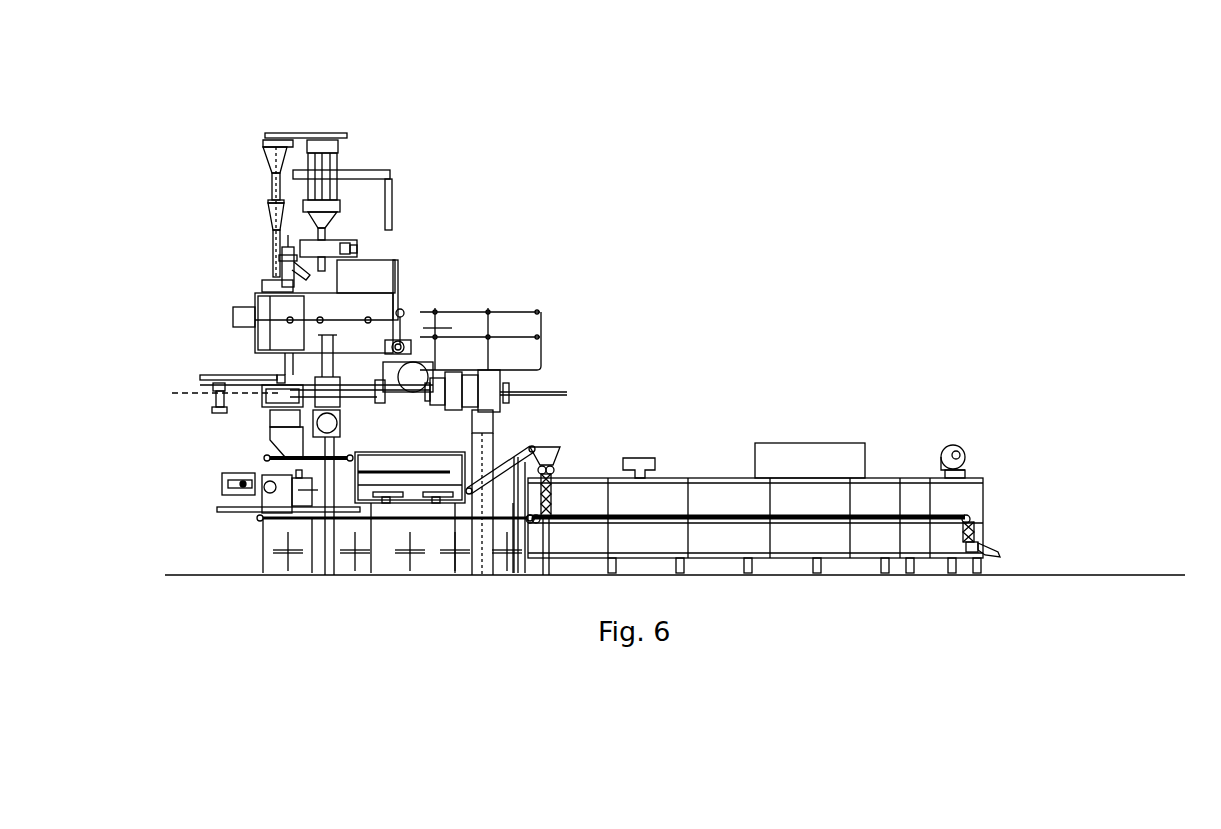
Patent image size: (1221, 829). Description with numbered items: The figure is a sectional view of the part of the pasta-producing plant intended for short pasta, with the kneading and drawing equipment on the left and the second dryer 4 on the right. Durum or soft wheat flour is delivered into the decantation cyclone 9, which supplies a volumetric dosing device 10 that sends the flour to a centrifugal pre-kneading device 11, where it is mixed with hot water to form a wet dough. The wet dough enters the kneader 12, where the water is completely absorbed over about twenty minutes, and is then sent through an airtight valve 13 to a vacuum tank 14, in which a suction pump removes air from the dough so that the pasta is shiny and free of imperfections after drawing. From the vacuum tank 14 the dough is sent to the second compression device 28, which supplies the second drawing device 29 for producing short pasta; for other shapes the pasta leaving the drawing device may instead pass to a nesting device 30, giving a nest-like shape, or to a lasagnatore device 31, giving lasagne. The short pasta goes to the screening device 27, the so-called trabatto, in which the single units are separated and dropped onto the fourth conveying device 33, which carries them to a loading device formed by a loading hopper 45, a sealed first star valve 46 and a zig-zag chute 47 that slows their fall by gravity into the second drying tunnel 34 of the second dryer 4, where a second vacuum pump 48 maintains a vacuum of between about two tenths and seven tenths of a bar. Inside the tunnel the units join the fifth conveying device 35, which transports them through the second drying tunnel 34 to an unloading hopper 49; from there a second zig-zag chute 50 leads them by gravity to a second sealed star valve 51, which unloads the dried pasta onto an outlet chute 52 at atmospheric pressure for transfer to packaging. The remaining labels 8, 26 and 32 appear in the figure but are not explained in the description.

The second dryer 4 is at (873, 482).
The processing plant 8 is at (507, 238).
The decantation cyclone 9 is at (322, 140).
The volumetric dosing device 10 is at (330, 215).
The centrifugal pre-kneading device 11 is at (270, 294).
The kneader 12 is at (337, 302).
The airtight valve 13 is at (405, 385).
The vacuum tank 14 is at (437, 362).
The fan 26 is at (958, 445).
The screening device 27 is at (450, 472).
The second compression device 28 is at (333, 385).
The second drawing device 29 is at (300, 390).
The nesting device 30 is at (268, 503).
The lasagnatore device 31 is at (232, 485).
The support post 32 is at (331, 458).
The fourth conveying device 33 is at (415, 487).
The second drying tunnel 34 is at (883, 540).
The fifth conveying device 35 is at (714, 508).
The loading hopper 45 is at (553, 460).
The first star valve 46 is at (550, 478).
The zig-zag chute 47 is at (543, 560).
The second vacuum pump 48 is at (647, 463).
The unloading hopper 49 is at (978, 525).
The second zig-zag chute 50 is at (980, 533).
The second sealed star valve 51 is at (970, 543).
The outlet chute 52 is at (990, 555).